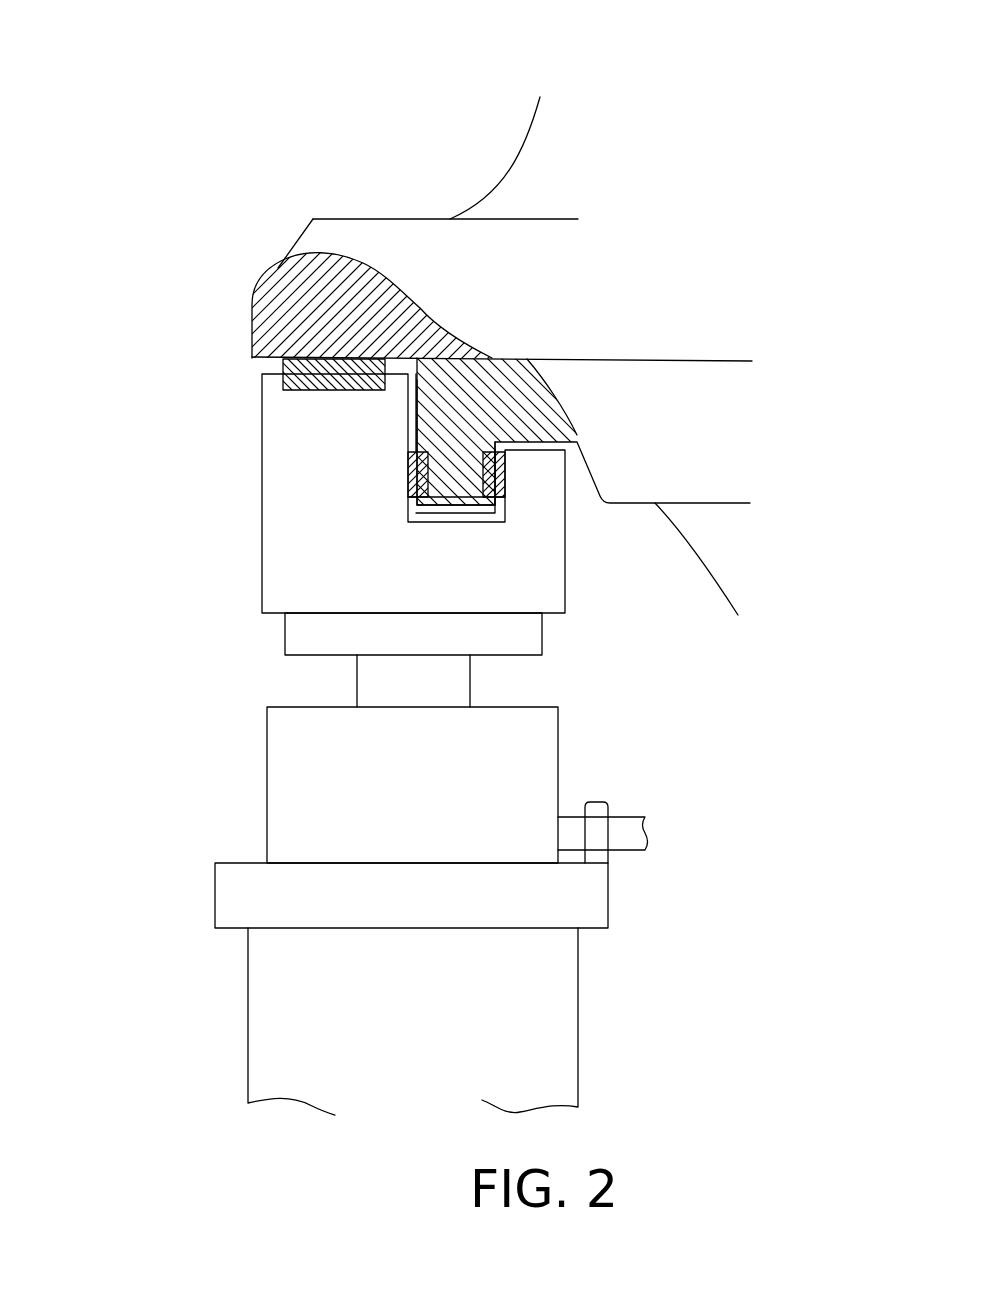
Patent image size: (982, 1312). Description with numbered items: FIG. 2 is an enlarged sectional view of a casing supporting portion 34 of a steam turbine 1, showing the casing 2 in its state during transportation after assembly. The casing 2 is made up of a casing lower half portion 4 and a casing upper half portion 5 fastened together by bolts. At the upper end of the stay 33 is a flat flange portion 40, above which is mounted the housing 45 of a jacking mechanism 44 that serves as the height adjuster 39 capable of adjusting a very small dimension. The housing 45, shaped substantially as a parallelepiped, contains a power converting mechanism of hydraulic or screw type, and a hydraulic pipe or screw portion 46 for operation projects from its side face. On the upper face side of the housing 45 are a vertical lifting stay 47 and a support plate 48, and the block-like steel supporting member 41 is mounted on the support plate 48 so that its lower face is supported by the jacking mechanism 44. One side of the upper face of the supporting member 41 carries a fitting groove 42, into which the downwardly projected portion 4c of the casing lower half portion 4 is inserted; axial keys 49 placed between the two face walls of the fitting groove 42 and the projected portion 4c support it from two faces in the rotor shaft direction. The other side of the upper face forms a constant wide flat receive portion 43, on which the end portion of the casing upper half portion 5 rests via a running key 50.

The turbine 1 is at (160, 146).
The casing 2 is at (370, 208).
The casing lower half portion 4 is at (675, 483).
The projected portion for supporting 4c is at (438, 500).
The casing upper half portion 5 is at (545, 145).
The stay 33 is at (558, 1020).
The casing supporting portion 34 is at (198, 948).
The height adjuster 39 is at (682, 845).
The flange portion 40 is at (580, 903).
The supporting member 41 is at (295, 553).
The fitting groove 42 is at (263, 452).
The receive portion 43 is at (278, 410).
The jacking mechanism 44 is at (590, 758).
The housing 45 is at (293, 790).
The hydraulic pipe or screw portion 46 is at (630, 815).
The vertical lifting stay 47 is at (373, 687).
The support plate 48 is at (300, 633).
The axial keys 49 is at (413, 477).
The running key 50 is at (310, 357).